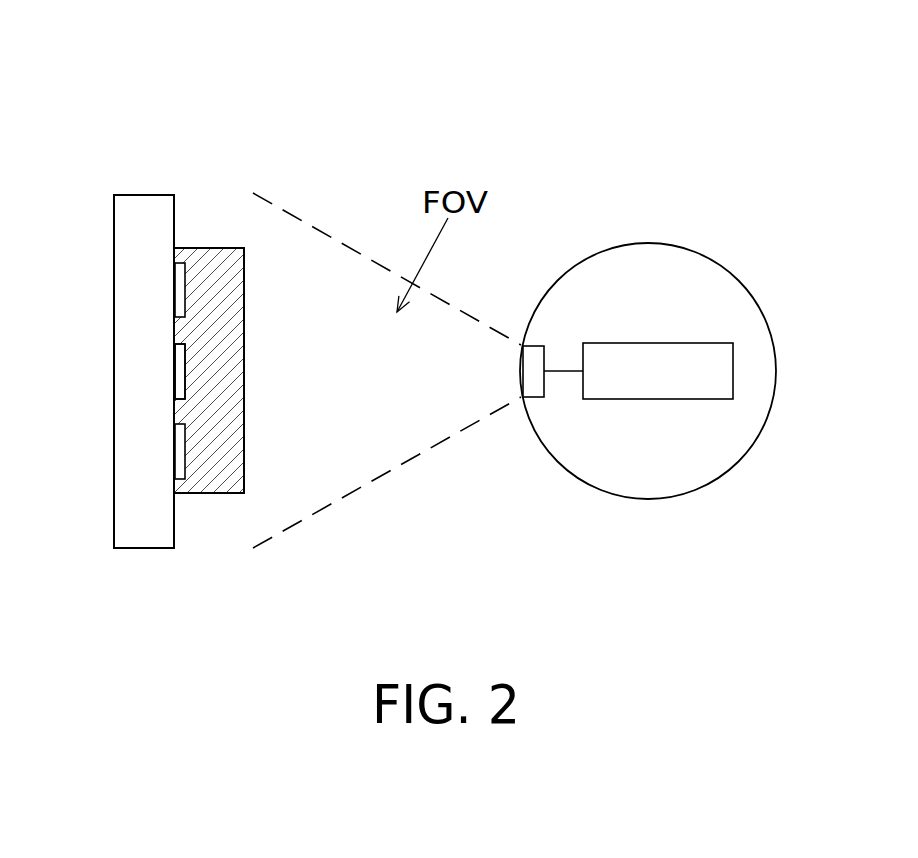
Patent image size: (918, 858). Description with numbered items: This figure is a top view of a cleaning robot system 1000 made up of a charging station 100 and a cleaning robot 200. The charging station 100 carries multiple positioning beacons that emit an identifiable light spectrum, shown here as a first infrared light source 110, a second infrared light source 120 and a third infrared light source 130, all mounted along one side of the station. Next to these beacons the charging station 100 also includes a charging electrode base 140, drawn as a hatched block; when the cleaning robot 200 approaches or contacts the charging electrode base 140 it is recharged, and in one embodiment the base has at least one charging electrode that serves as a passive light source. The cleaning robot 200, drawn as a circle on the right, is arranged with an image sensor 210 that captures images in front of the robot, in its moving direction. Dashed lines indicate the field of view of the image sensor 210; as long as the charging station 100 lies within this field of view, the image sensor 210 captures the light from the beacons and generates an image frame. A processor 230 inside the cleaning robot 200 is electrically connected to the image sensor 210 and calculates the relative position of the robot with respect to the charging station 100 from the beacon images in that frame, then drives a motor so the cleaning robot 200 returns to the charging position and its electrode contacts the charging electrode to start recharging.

The cleaning robot system 1000 is at (183, 68).
The charging station 100 is at (122, 205).
The first infrared light source 110 is at (177, 480).
The second infrared light source 120 is at (178, 262).
The third infrared light source 130 is at (180, 370).
The charging electrode base 140 is at (228, 439).
The cleaning robot 200 is at (697, 250).
The image sensor 210 is at (537, 346).
The processor 230 is at (695, 398).